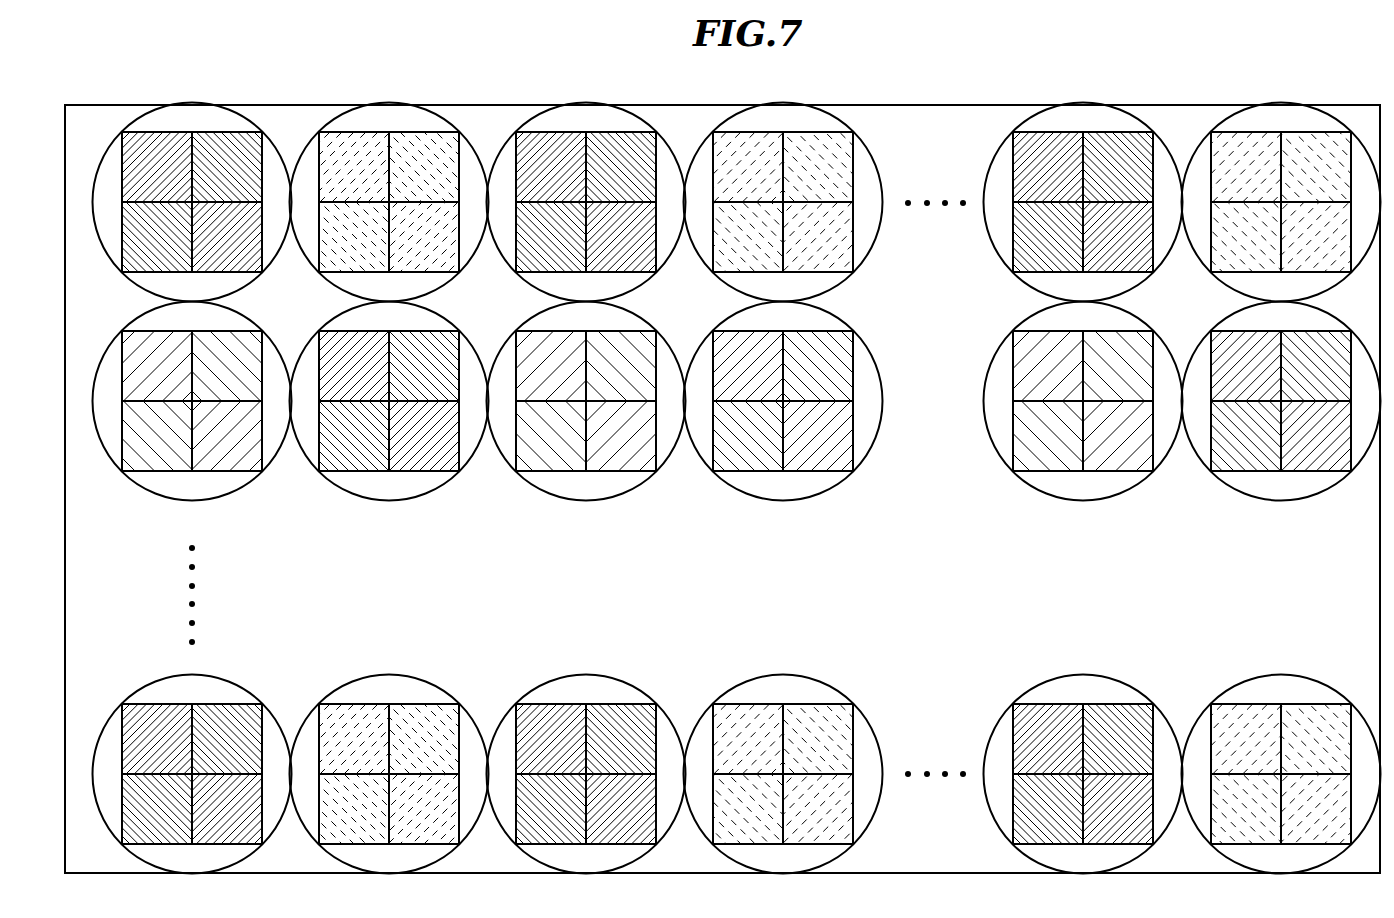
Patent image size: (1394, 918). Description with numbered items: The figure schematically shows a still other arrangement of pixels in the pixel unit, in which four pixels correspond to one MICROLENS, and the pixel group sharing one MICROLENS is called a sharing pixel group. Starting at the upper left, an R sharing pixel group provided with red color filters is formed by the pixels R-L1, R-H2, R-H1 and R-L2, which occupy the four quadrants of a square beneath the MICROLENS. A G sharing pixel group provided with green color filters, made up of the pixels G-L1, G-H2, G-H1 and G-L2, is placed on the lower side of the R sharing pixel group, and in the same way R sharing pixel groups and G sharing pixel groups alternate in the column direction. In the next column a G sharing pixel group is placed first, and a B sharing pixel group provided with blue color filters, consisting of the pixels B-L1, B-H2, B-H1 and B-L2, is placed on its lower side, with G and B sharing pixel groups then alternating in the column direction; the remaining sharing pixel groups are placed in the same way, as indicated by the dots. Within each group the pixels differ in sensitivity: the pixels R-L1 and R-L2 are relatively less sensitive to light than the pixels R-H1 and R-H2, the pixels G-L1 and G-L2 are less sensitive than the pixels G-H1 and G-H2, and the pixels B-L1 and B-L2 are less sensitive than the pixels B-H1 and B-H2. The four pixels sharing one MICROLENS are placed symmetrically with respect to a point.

The microlens MICROLENS is at (452, 120).
The pixel R-L1 is at (157, 453).
The pixel R-H2 is at (227, 453).
The pixel R-H1 is at (157, 523).
The pixel R-L2 is at (227, 523).
The pixel G-L1 is at (255, 453).
The pixel G-H2 is at (325, 453).
The pixel G-H1 is at (255, 523).
The pixel G-L2 is at (325, 523).
The pixel B-L1 is at (354, 366).
The pixel B-H2 is at (424, 366).
The pixel B-H1 is at (354, 436).
The pixel B-L2 is at (424, 436).